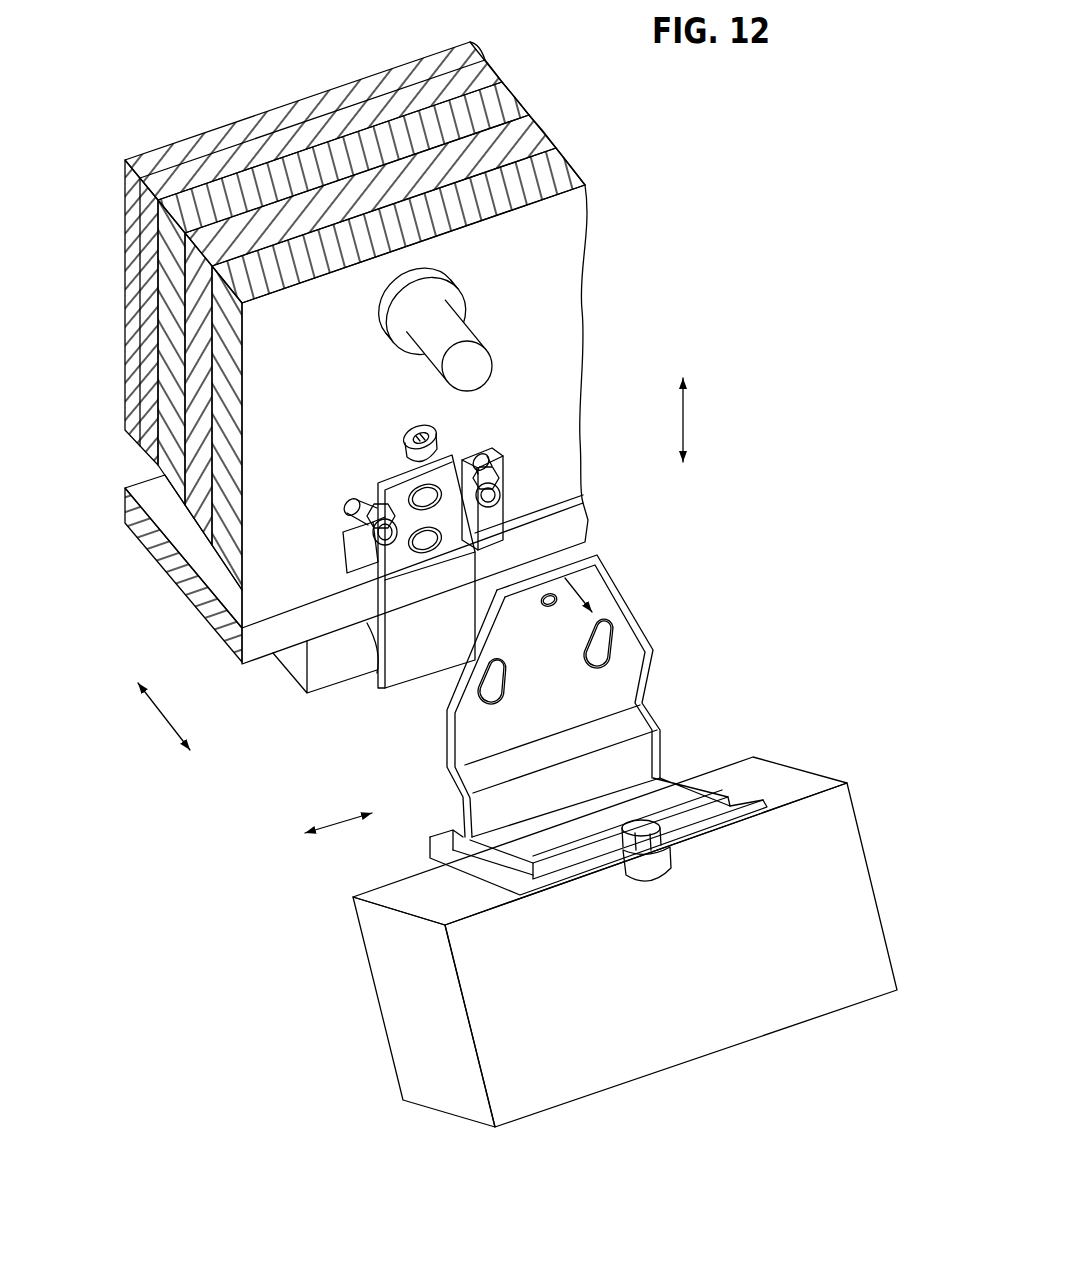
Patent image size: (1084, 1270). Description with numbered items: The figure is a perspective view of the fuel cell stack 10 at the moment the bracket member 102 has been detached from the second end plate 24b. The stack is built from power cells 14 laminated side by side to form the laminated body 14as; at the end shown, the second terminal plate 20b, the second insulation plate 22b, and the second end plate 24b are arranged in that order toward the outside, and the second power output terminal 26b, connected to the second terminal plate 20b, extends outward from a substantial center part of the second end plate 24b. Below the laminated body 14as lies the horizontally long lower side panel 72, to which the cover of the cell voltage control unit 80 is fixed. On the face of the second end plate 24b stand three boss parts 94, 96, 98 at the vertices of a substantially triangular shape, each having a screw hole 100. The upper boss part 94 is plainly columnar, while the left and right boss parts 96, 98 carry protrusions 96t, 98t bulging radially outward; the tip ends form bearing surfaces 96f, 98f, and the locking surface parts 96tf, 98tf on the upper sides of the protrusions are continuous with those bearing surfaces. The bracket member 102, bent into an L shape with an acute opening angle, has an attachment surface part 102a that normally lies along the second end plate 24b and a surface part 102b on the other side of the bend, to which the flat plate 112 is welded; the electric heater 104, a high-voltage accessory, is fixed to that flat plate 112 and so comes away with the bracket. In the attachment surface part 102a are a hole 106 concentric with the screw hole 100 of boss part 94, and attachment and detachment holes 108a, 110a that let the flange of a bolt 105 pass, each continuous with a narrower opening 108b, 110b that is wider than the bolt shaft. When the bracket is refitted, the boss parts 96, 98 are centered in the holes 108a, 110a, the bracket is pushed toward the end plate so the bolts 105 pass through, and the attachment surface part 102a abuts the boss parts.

The fuel cell stack 10 is at (747, 85).
The power cell 14 is at (235, 160).
The laminated body 14as is at (272, 63).
The second terminal plate 20b is at (498, 98).
The second insulation plate 22b is at (532, 130).
The second end plate 24b is at (598, 217).
The second power output terminal 26b is at (467, 333).
The lower side panel 72 is at (185, 588).
The cell voltage control unit 80 is at (283, 668).
The boss part 94 is at (412, 425).
The boss part 96 is at (342, 518).
The bearing surface 96f is at (377, 508).
The protrusion 96t is at (347, 505).
The locking surface part 96tf is at (357, 505).
The boss part 98 is at (500, 440).
The bearing surface 98f is at (482, 468).
The protrusion 98t is at (490, 452).
The locking surface part 98tf is at (492, 466).
The screw hole 100 is at (343, 565).
The bracket member 102 is at (443, 747).
The attachment surface part 102a is at (627, 683).
The surface part 102b is at (567, 833).
The electric heater 104 is at (392, 1005).
The bolt 105 is at (468, 512).
The hole 106 is at (547, 606).
The attachment and detachment hole 108a is at (508, 698).
The opening 108b is at (503, 670).
The attachment and detachment hole 110a is at (618, 653).
The opening 110b is at (608, 632).
The flat plate 112 is at (497, 890).